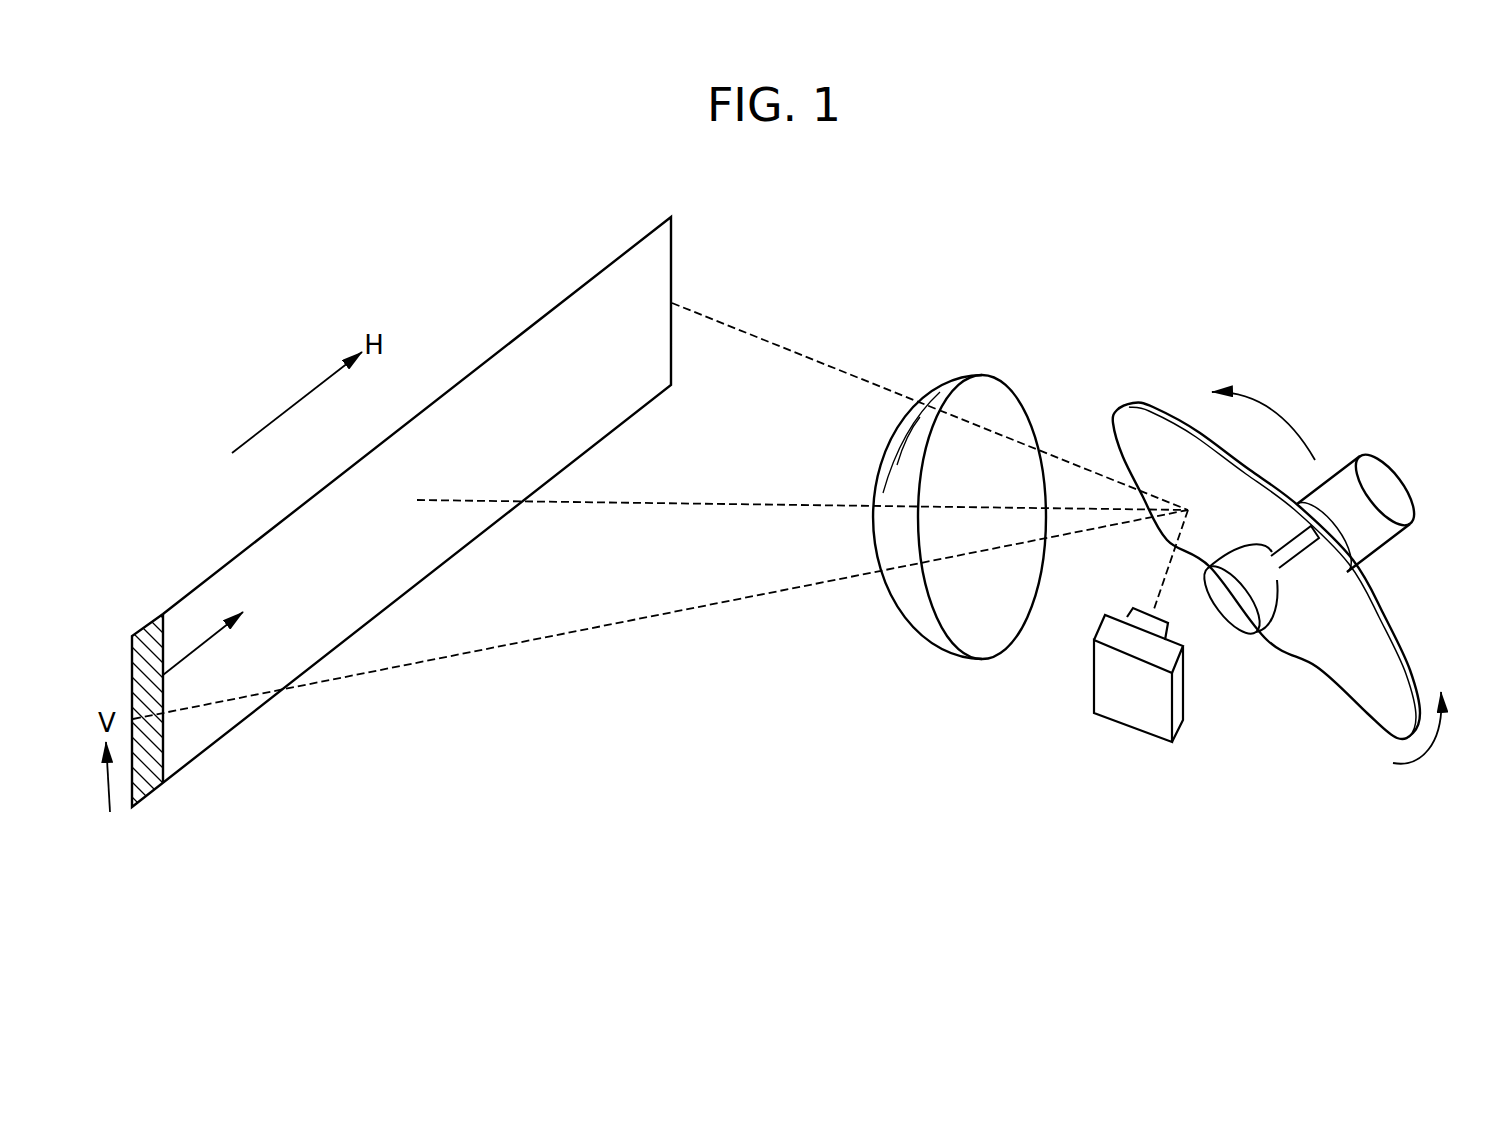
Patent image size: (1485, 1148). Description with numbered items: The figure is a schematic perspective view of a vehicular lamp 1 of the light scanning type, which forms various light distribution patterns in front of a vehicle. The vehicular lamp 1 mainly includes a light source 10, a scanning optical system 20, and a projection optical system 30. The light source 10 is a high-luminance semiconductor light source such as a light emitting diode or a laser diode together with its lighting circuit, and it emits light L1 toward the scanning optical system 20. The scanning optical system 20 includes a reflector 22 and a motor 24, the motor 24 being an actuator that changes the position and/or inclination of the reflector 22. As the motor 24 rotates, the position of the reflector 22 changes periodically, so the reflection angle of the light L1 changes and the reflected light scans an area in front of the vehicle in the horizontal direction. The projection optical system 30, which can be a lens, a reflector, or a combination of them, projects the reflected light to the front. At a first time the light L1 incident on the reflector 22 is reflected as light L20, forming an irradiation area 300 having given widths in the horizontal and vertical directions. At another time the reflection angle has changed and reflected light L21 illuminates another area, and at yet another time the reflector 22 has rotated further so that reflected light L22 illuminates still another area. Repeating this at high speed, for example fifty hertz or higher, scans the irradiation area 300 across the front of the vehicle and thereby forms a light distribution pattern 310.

The vehicular lamp 1 is at (1157, 576).
The light source 10 is at (1138, 607).
The scanning optical system 20 is at (1382, 282).
The reflector 22 is at (1165, 400).
The motor 24 is at (1350, 455).
The projection optical system 30 is at (913, 633).
The irradiation area 300 is at (147, 658).
The light distribution pattern 310 is at (545, 315).
The emitted light L1 is at (1163, 592).
The reflected light at time t0 L20 is at (695, 610).
The reflected light at time t1 L21 is at (652, 503).
The reflected light at time t2 L22 is at (788, 350).